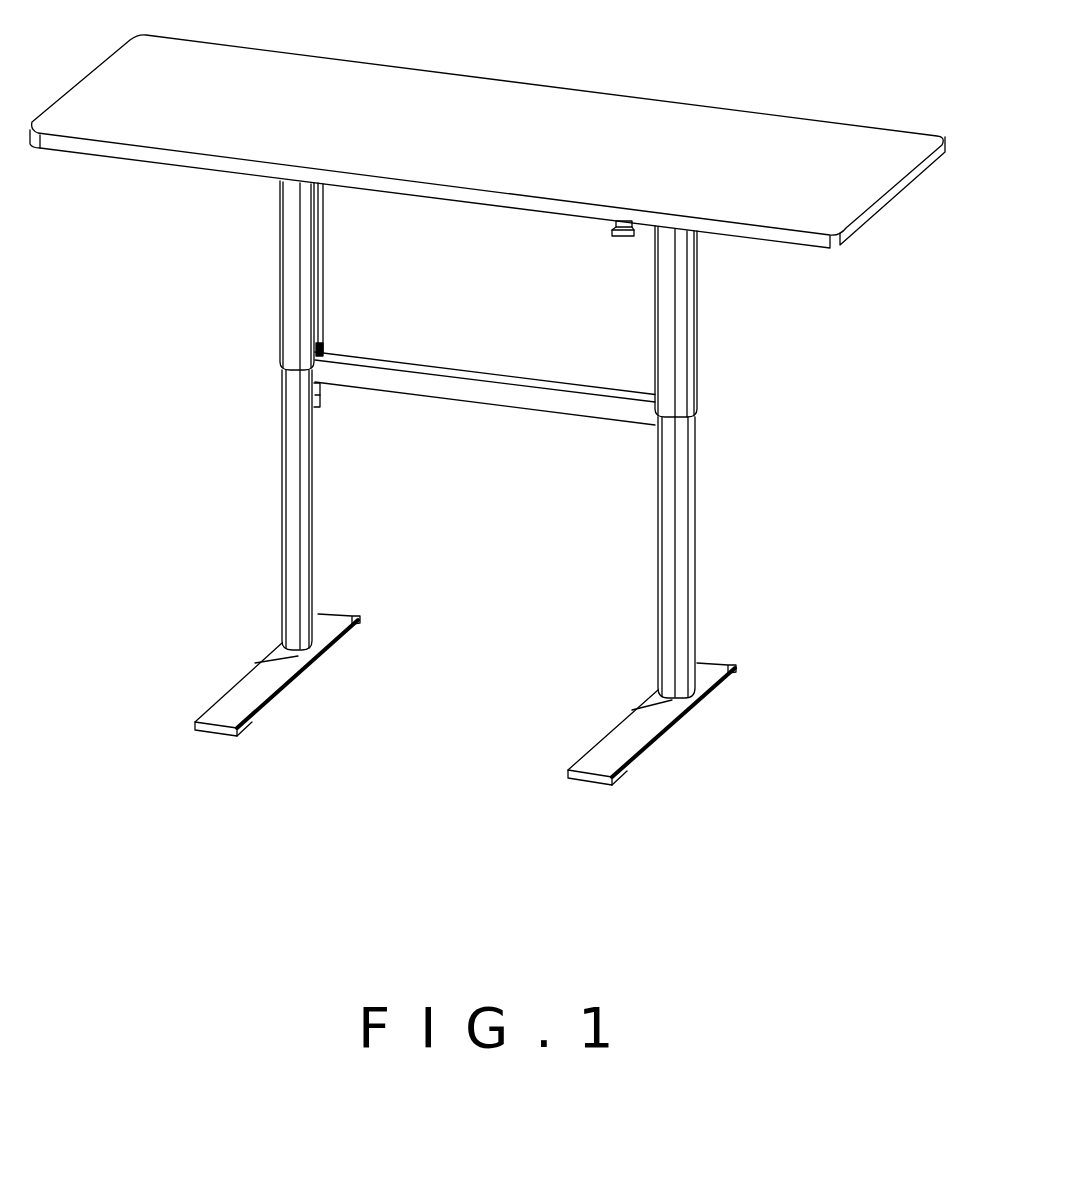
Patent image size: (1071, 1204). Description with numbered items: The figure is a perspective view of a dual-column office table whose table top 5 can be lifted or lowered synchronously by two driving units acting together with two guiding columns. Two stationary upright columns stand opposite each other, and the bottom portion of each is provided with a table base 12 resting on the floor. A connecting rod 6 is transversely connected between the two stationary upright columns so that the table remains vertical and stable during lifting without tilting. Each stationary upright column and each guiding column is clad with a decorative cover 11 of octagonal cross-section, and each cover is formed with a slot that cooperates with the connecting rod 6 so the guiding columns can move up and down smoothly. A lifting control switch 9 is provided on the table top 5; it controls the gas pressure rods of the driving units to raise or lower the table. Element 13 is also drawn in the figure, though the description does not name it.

The table top 5 is at (730, 135).
The connecting rod 6 is at (472, 388).
The lifting control switch 9 is at (623, 237).
The decorative cover 11 is at (288, 540).
The table base 12 is at (235, 700).
The bracket / guide 13 is at (318, 297).